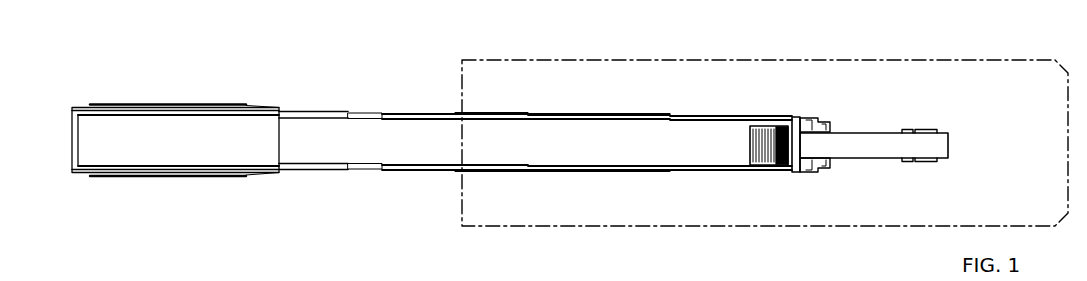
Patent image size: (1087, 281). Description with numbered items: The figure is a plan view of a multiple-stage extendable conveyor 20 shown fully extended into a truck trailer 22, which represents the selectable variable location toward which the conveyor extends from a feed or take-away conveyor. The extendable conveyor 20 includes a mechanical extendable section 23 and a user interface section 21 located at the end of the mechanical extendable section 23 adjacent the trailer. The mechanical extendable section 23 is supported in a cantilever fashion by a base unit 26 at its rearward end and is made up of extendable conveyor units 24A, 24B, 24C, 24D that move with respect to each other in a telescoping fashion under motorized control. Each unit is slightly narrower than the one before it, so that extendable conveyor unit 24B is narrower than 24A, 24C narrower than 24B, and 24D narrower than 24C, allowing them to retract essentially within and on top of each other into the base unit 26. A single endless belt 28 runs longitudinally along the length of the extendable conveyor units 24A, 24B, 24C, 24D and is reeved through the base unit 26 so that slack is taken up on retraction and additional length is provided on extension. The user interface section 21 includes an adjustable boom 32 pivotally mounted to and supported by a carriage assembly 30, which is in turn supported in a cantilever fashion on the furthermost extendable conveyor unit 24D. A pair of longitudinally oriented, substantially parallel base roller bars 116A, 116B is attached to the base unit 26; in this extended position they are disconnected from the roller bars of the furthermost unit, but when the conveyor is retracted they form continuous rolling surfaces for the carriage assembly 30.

The multiple-stage extendable conveyor 20 is at (102, 85).
The base unit 26 is at (141, 107).
The base roller bar 116B is at (170, 117).
The base roller bar 116A is at (177, 168).
The extendable conveyor unit 24A is at (313, 113).
The endless belt 28 is at (368, 137).
The extendable conveyor unit 24B is at (451, 116).
The extendable conveyor unit 24C is at (582, 116).
The extendable conveyor unit 24D is at (692, 121).
The user interface section 21 is at (802, 116).
The carriage assembly 30 is at (801, 172).
The adjustable boom 32 is at (868, 136).
The truck trailer 22 is at (461, 198).
The mechanical extendable section 23 is at (561, 183).